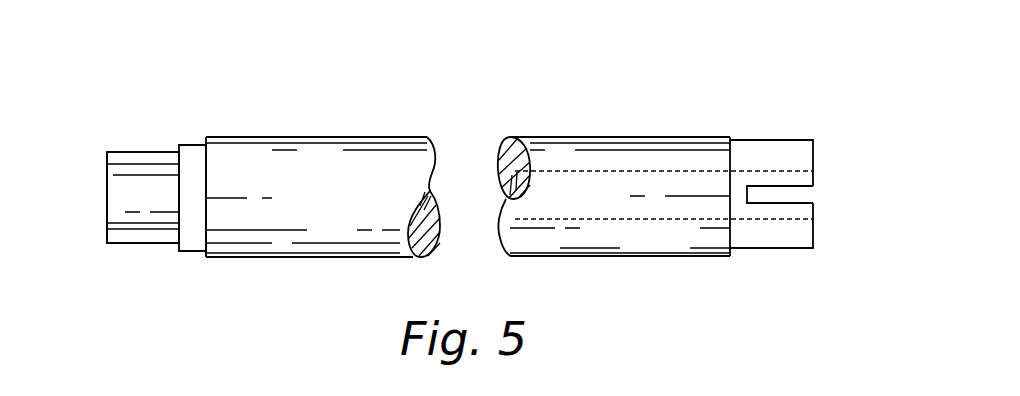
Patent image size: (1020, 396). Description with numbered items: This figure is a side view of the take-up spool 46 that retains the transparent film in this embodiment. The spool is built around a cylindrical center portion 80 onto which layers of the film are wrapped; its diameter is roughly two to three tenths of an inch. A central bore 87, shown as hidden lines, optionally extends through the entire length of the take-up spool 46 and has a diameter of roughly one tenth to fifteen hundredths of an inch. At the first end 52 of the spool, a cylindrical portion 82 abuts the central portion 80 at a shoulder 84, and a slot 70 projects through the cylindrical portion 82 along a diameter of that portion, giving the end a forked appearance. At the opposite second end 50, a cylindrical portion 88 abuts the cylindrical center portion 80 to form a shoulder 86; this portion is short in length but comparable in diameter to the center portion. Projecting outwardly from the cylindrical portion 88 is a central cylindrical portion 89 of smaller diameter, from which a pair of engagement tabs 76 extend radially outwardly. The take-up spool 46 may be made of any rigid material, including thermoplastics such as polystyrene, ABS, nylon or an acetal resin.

The take-up spool 46 is at (544, 62).
The second end 50 is at (129, 133).
The first end 52 is at (792, 113).
The slot 70 is at (803, 200).
The engagement tabs 76 is at (135, 240).
The cylindrical center portion 80 is at (325, 162).
The cylindrical portion 82 is at (760, 242).
The shoulder 84 is at (733, 138).
The shoulder 86 is at (205, 255).
The central bore 87 is at (590, 170).
The cylindrical portion 88 is at (195, 157).
The central cylindrical portion 89 is at (118, 200).